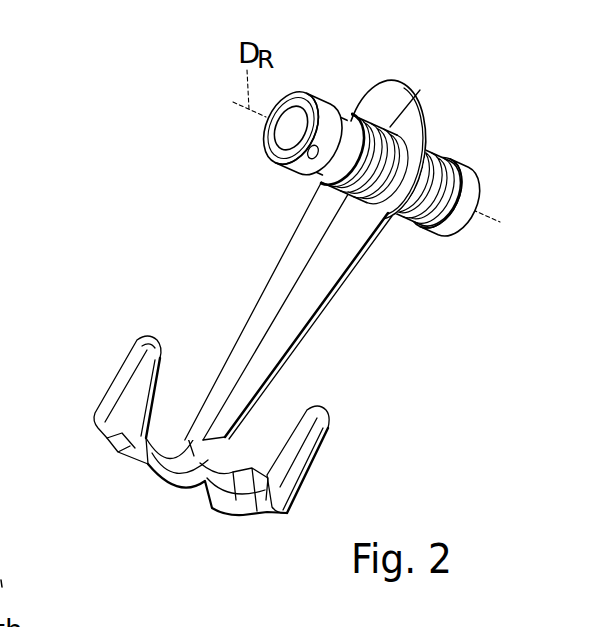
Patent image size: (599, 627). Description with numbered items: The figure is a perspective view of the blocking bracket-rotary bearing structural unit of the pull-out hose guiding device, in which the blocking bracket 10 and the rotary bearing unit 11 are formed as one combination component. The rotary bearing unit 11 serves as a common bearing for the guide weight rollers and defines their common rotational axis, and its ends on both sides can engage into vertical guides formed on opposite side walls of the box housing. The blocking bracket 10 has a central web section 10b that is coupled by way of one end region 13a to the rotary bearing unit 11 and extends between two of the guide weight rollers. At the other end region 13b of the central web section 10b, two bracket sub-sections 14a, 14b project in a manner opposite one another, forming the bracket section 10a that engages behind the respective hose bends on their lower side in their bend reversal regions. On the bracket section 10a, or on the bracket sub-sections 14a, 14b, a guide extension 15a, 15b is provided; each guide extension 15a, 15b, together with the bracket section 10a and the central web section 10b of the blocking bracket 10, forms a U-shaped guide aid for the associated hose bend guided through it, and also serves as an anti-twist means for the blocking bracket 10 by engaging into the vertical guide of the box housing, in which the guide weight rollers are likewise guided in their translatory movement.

The blocking bracket 10 is at (272, 275).
The bracket section 10a is at (220, 513).
The central web section 10b is at (300, 305).
The rotary bearing unit 11 is at (305, 178).
The end region 13a is at (397, 140).
The other end region 13b is at (212, 448).
The bracket sub-section 14a is at (147, 483).
The bracket sub-section 14b is at (247, 515).
The guide extension 15a is at (128, 370).
The guide extension 15b is at (312, 458).